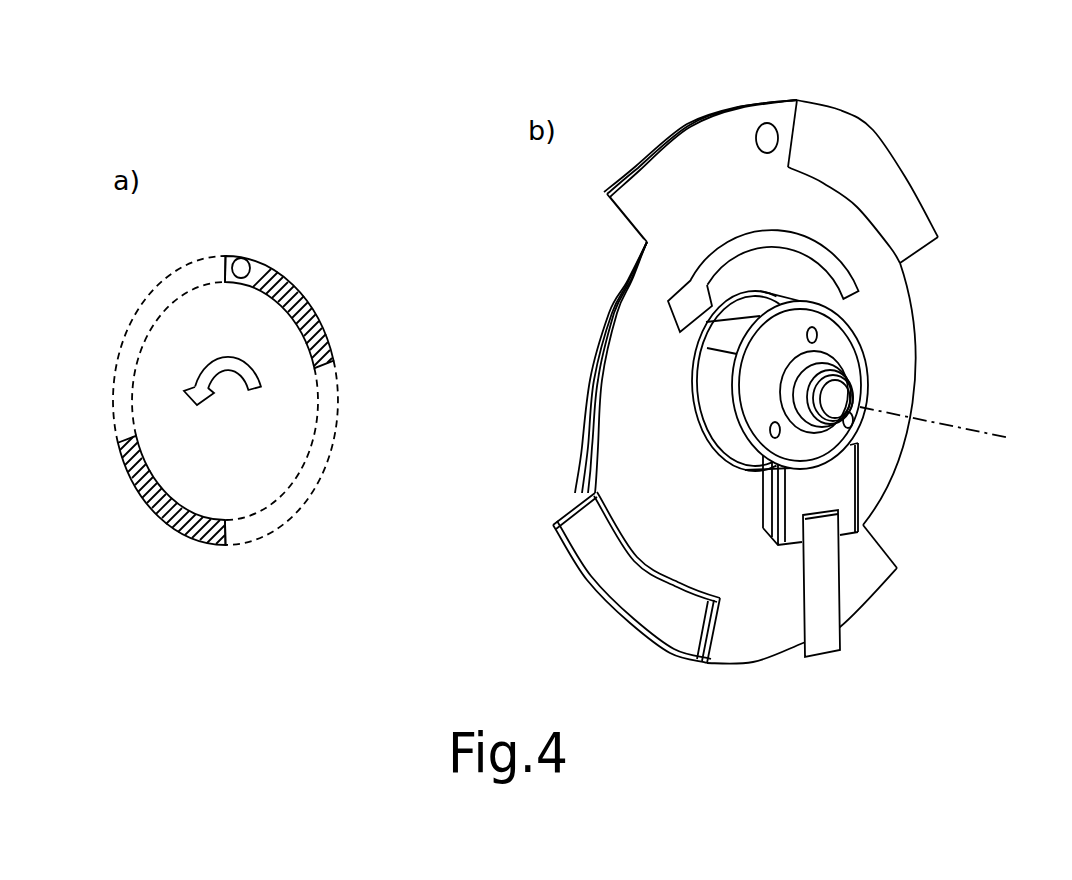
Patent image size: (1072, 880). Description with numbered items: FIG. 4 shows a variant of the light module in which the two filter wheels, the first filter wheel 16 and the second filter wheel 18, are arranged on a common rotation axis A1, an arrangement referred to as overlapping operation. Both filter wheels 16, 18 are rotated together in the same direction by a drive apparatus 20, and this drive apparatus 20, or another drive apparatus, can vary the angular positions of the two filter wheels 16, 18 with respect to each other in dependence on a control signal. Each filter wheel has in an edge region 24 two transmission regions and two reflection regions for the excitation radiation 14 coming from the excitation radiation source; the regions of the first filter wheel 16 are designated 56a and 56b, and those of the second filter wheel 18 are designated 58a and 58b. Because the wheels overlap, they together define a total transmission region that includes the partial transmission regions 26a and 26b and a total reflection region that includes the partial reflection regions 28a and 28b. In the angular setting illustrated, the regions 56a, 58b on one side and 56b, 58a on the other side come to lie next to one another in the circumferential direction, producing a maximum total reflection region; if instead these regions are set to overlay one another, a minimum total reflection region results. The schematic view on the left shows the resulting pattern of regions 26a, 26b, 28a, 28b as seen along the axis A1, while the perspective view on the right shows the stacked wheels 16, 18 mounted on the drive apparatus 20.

The excitation radiation 14 is at (240, 270).
The first filter wheel 16 is at (670, 424).
The second filter wheel 18 is at (293, 532).
The drive apparatus 20 is at (835, 398).
The edge region 24 is at (122, 398).
The partial transmission region 26a is at (148, 308).
The partial transmission region 26b is at (345, 400).
The partial reflection region 28a is at (197, 516).
The partial reflection region 28b is at (302, 300).
The transmission region of the first filter wheel 56a is at (220, 545).
The transmission region of the first filter wheel 56b is at (258, 286).
The transmission region of the second filter wheel 58a is at (578, 233).
The transmission region of the second filter wheel 58b is at (390, 549).
The rotation axis A1 is at (956, 431).